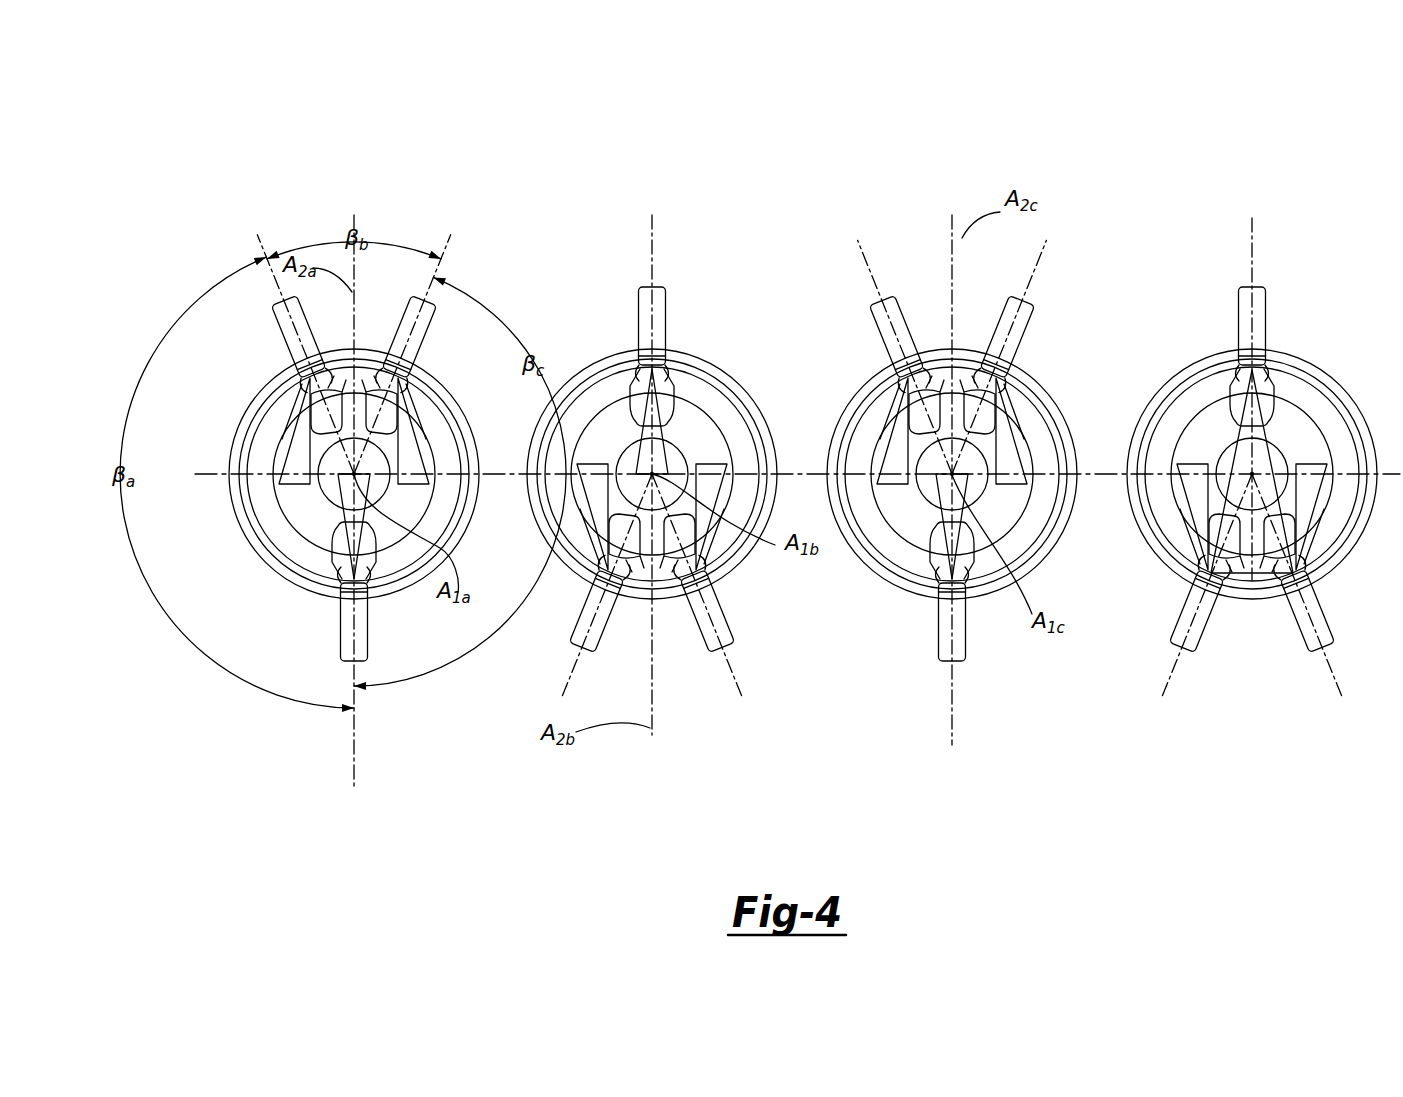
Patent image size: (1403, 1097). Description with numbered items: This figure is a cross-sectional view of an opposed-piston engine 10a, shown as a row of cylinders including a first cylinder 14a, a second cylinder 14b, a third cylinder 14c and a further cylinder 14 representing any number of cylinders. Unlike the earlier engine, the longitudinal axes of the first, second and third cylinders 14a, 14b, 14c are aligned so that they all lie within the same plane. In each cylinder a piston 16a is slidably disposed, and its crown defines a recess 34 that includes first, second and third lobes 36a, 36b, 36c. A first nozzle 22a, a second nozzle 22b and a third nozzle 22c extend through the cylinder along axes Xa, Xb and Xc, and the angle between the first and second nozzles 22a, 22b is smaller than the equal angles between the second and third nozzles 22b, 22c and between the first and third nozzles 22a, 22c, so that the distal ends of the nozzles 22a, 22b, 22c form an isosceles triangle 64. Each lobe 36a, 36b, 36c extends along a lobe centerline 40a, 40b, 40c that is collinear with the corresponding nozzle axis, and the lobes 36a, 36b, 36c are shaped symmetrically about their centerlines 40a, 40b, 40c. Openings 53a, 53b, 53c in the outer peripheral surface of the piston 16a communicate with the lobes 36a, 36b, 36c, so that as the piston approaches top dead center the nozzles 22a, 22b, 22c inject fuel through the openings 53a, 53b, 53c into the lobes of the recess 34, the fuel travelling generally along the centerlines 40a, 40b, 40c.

The engine 10a is at (210, 245).
The first cylinder 14a is at (236, 452).
The second cylinder 14b is at (752, 408).
The third cylinder 14c is at (1068, 422).
The cylinder 14 is at (1325, 375).
The piston 16a is at (283, 434).
The first nozzle 22a is at (341, 652).
The second nozzle 22b is at (292, 365).
The third nozzle 22c is at (417, 360).
The recess 34 is at (326, 524).
The first lobe 36a is at (336, 556).
The second lobe 36b is at (338, 378).
The third lobe 36c is at (369, 378).
The first lobe centerline 40a is at (352, 742).
The second lobe centerline 40b is at (268, 278).
The third lobe centerline 40c is at (453, 255).
The opening 53a is at (366, 586).
The opening 53b is at (302, 386).
The opening 53c is at (405, 392).
The isosceles triangle 64 is at (1268, 436).